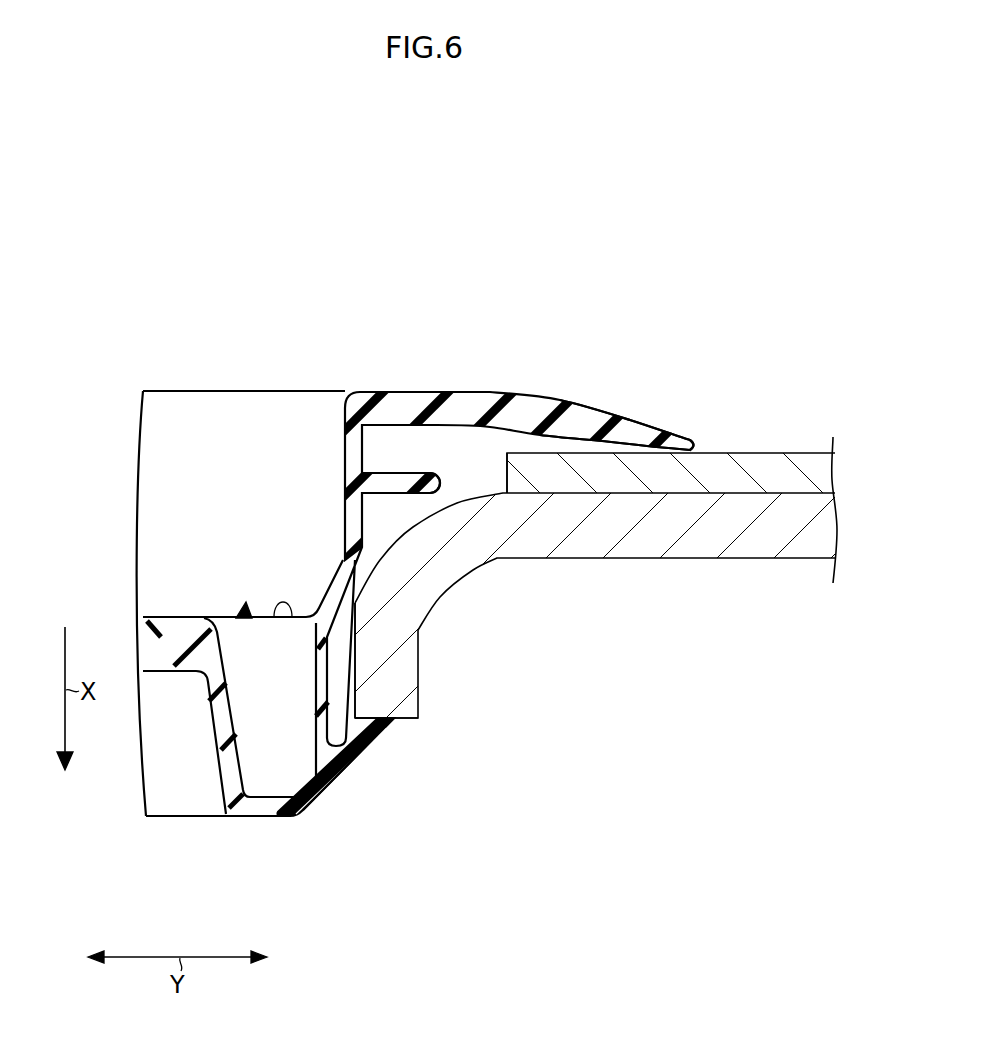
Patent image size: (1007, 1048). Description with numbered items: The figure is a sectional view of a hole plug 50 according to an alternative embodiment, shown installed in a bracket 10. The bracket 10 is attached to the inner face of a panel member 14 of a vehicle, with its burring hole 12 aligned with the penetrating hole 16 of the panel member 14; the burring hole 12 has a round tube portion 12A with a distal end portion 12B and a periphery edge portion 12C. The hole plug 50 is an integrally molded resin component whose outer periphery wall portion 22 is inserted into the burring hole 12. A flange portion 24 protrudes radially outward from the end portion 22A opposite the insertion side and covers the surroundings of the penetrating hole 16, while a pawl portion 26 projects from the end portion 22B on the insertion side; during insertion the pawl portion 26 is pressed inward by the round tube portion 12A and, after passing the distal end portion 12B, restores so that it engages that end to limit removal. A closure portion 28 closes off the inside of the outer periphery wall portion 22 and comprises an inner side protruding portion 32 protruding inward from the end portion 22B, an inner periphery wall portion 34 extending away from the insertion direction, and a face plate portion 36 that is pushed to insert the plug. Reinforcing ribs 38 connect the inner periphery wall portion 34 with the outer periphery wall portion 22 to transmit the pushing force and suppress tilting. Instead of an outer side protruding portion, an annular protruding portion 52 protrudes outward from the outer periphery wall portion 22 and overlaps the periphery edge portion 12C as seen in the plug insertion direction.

The bracket 10 is at (739, 562).
The burring hole 12 is at (353, 655).
The round tube portion 12A is at (420, 708).
The distal end portion 12B is at (397, 722).
The periphery edge portion 12C is at (366, 537).
The panel member 14 is at (752, 452).
The penetrating hole 16 is at (507, 478).
The outer periphery wall portion 22 is at (400, 527).
The end portion 22A is at (350, 392).
The end portion 22B is at (314, 813).
The flange portion 24 is at (613, 410).
The pawl portion 26 is at (380, 735).
The closure portion 28 is at (195, 600).
The inner side protruding portion 32 is at (270, 818).
The inner periphery wall portion 34 is at (215, 750).
The face plate portion 36 is at (155, 618).
The reinforcing rib 38 is at (283, 618).
The hole plug 50 is at (527, 322).
The protruding portion 52 is at (437, 478).